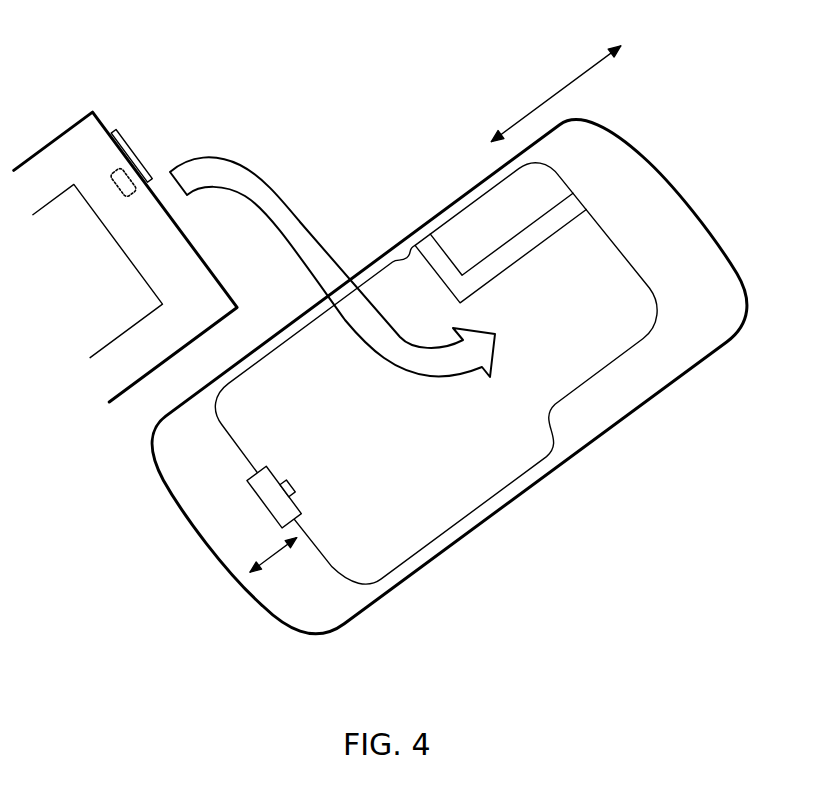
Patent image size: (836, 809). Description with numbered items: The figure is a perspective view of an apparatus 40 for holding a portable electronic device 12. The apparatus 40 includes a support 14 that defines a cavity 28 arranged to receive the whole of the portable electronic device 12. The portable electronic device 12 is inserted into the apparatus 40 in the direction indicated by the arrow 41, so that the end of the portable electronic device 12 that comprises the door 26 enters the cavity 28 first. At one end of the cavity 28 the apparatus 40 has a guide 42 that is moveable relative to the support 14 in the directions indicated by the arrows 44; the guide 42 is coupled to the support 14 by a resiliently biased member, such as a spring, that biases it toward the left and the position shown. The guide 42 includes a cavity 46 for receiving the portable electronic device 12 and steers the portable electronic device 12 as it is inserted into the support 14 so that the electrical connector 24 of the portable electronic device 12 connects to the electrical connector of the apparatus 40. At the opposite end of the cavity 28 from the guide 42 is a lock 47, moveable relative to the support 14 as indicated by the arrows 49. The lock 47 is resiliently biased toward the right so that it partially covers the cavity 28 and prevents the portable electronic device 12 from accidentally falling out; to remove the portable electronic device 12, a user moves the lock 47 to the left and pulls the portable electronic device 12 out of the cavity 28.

The portable electronic device 12 is at (144, 230).
The support 14 is at (348, 605).
The electrical connector 24 is at (132, 197).
The door 26 is at (123, 140).
The cavity 28 is at (407, 420).
The apparatus 40 is at (459, 356).
The arrow 41 is at (248, 180).
The guide 42 is at (472, 222).
The arrows 44 is at (577, 75).
The cavity 46 is at (550, 222).
The lock 47 is at (287, 487).
The arrows 49 is at (275, 553).